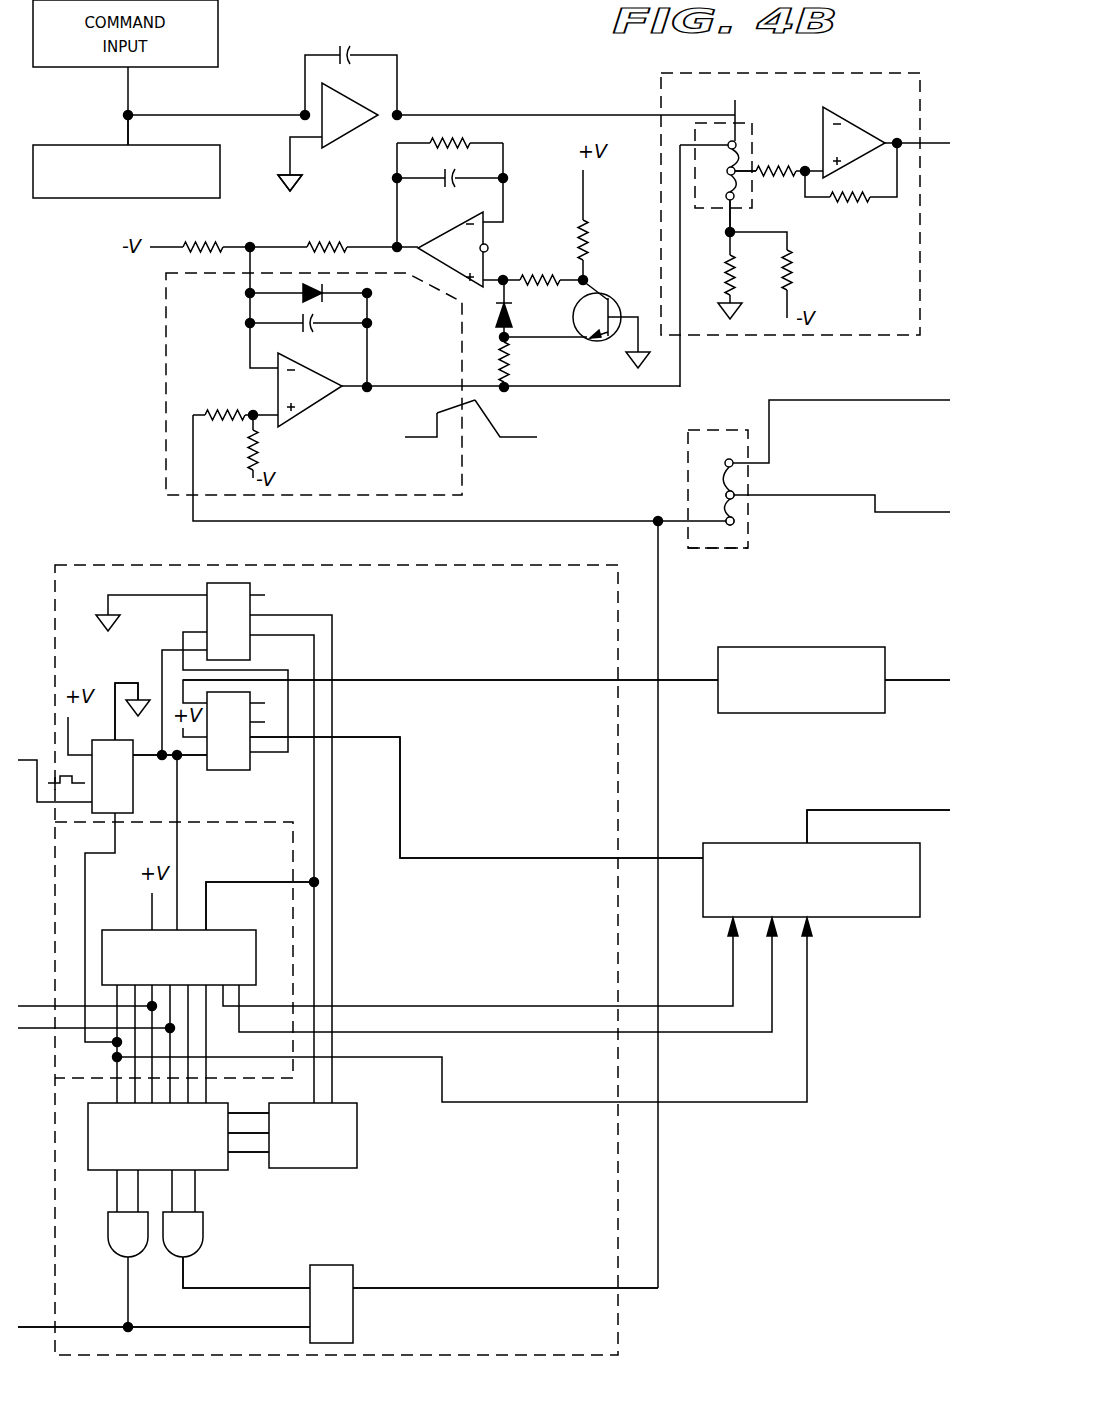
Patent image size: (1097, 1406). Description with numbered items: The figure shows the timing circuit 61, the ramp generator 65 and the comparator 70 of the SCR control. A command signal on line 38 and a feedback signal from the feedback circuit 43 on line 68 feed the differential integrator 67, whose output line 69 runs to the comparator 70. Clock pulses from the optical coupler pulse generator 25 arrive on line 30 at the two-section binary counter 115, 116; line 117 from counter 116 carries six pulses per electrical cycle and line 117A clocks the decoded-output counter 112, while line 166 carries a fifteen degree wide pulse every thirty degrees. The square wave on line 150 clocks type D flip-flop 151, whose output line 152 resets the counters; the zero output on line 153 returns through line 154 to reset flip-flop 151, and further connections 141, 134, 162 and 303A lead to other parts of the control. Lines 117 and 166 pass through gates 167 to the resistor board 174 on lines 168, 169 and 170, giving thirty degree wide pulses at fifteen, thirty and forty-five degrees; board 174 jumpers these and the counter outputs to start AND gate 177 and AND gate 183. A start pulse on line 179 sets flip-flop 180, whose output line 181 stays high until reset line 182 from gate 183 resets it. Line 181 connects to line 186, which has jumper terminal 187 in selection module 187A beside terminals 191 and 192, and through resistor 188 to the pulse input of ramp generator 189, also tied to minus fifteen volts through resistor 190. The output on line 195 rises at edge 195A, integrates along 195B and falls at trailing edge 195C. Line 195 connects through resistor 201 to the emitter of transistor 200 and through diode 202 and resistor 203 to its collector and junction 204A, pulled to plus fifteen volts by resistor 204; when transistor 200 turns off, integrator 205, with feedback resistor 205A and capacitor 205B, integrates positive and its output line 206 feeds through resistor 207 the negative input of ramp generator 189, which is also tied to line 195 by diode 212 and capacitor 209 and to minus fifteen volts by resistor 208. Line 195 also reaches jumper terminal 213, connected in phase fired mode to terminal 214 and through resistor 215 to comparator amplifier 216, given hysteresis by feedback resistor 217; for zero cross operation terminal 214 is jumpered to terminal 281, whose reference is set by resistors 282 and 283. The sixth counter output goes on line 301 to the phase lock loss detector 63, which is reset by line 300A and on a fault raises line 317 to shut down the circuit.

The command signal line 38 is at (131, 93).
The feedback line 68 is at (125, 128).
The feedback control circuit 43 is at (95, 201).
The differential integrator 67 is at (352, 132).
The output line of differential integrator 69 is at (435, 112).
The resistor 207 is at (320, 244).
The resistor 208 is at (220, 232).
The output line of integrator 206 is at (352, 247).
The integrator 205 is at (460, 243).
The resistor 205A is at (456, 140).
The capacitor 205B is at (500, 176).
The resistor 203 is at (535, 276).
The resistor 204 is at (586, 236).
The junction 204A is at (586, 280).
The diode 202 is at (512, 320).
The resistor 201 is at (509, 358).
The transistor 200 is at (603, 342).
The diode 212 is at (300, 290).
The capacitor 209 is at (312, 331).
The ramp generator 65 is at (166, 340).
The resistor 188 is at (212, 413).
The ramp generator 189 is at (309, 410).
The resistor 190 is at (261, 450).
The ramp generator output line 195 is at (410, 385).
The ramp leading edge 195A is at (436, 430).
The ramp portion 195B is at (447, 420).
The ramp trailing edge 195C is at (478, 403).
The jumper terminal 213 is at (738, 112).
The resistor 215 is at (782, 166).
The jumper terminal 214 is at (737, 176).
The comparator amplifier 216 is at (864, 127).
The feedback resistor 217 is at (843, 203).
The jumper terminal 281 is at (720, 196).
The resistor 282 is at (797, 282).
The resistor 283 is at (728, 260).
The comparator 70 is at (826, 337).
The jumper terminal 191 is at (729, 459).
The jumper terminal 192 is at (734, 493).
The jumper terminal 187 is at (735, 521).
The selection module 187A is at (693, 549).
The line 186 is at (540, 521).
The timing circuit 61 is at (100, 565).
The counter section 116 is at (236, 583).
The output line of counter 166 is at (334, 1043).
The type D flip-flop 151 is at (103, 740).
The flip-flop output line 152 is at (148, 763).
The line 150 is at (55, 806).
The counter section 115 is at (226, 772).
The output line of counter 117 is at (313, 786).
The line 117A is at (207, 905).
The pulse line 30 is at (915, 680).
The optical coupler 25 is at (795, 714).
The line 303A is at (472, 858).
The line 317 is at (902, 810).
The phase lock loss detector 63 is at (898, 917).
The line 154 is at (83, 893).
The decoder 112 is at (135, 929).
The line 153 is at (117, 995).
The line 141 is at (70, 1004).
The line 134 is at (61, 1030).
The line 301 is at (572, 1006).
The line 162 is at (502, 1031).
The line 300A is at (712, 1102).
The resistor board 174 is at (88, 1146).
The line 168 is at (250, 1113).
The gates 167 is at (357, 1138).
The line 169 is at (252, 1140).
The line 170 is at (240, 1155).
The AND gate 183 is at (107, 1248).
The start AND gate 177 is at (204, 1235).
The line 179 is at (212, 1288).
The output line 181 is at (403, 1288).
The reset line 182 is at (160, 1327).
The flip-flop 180 is at (355, 1322).